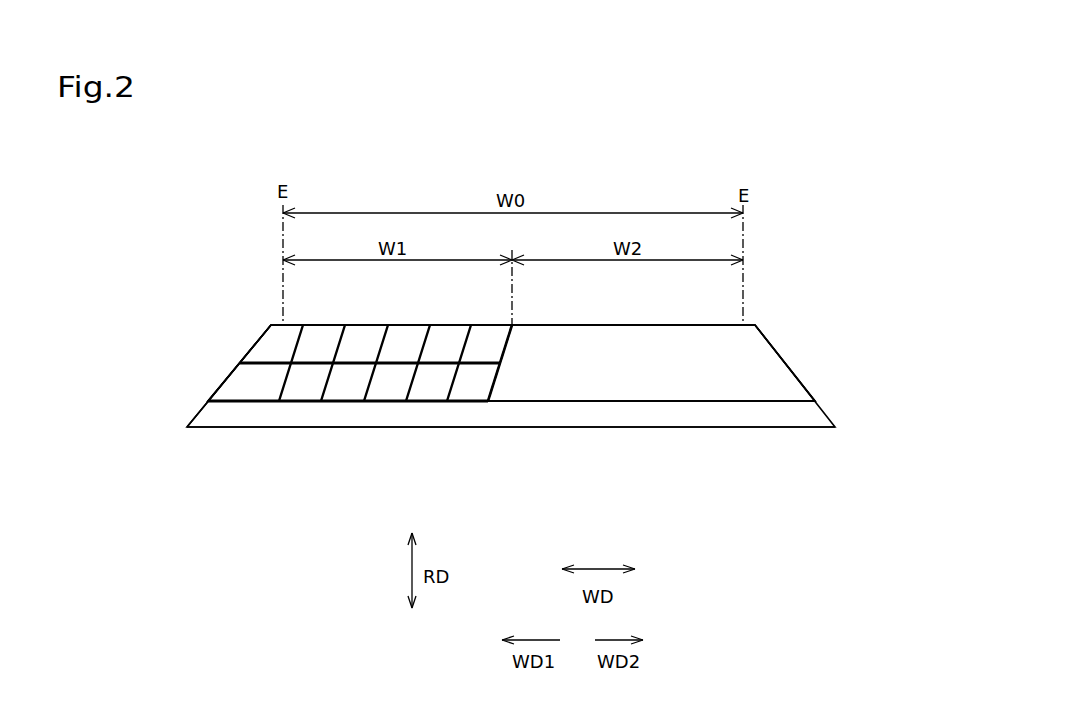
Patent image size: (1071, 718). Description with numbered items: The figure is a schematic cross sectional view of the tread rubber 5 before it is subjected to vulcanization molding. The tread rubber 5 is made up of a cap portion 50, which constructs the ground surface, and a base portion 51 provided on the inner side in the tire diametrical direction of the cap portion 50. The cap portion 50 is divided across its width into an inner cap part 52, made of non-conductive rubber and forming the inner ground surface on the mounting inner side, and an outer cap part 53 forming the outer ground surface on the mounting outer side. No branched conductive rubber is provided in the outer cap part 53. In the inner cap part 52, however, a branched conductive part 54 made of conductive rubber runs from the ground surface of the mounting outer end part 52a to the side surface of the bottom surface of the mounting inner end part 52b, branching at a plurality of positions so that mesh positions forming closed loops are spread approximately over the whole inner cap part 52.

The tread rubber 5 is at (349, 495).
The cap portion 50 is at (511, 341).
The base portion 51 is at (590, 418).
The inner cap part 52 is at (354, 377).
The mounting outer end part 52a is at (517, 345).
The mounting inner end part 52b is at (197, 384).
The outer cap part 53 is at (620, 333).
The branched conductive part 54 is at (297, 350).